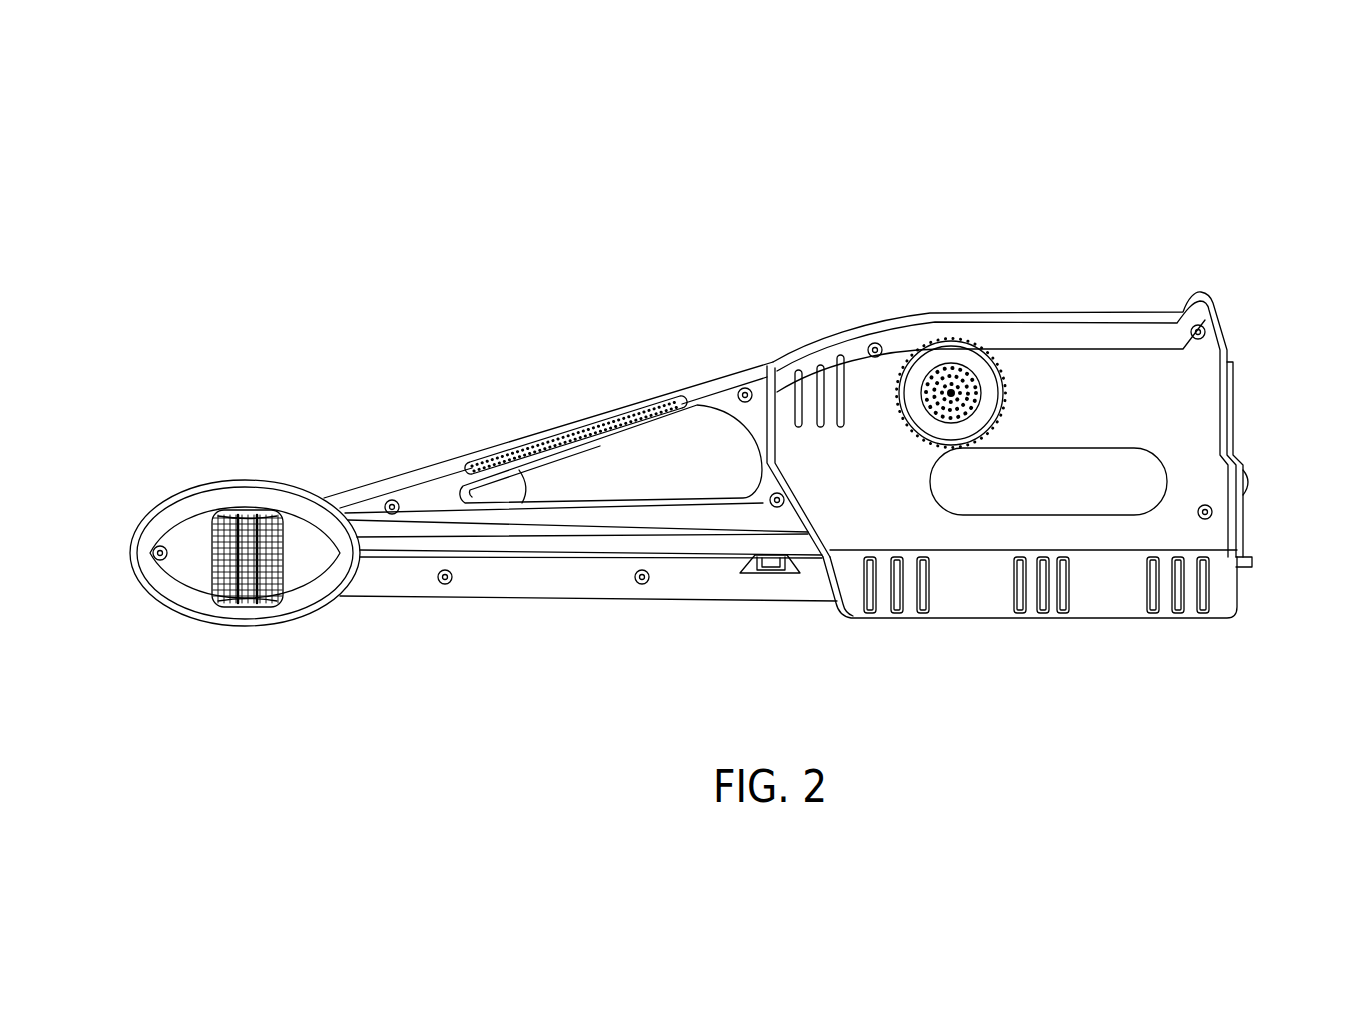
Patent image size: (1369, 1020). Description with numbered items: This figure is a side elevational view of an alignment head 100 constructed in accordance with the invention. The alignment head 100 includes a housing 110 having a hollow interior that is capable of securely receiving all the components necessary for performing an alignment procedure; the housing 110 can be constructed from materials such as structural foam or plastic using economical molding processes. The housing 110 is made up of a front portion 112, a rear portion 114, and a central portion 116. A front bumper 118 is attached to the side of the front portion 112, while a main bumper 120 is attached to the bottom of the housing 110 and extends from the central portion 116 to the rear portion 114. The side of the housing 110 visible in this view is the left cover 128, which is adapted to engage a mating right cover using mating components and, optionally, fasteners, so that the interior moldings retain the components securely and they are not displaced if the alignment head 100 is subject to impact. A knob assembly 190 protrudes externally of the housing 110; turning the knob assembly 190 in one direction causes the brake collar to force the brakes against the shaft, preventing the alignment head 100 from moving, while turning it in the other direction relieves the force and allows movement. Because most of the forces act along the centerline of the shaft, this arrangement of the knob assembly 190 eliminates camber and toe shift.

The alignment head 100 is at (1142, 165).
The housing 110 is at (698, 383).
The front portion 112 is at (208, 462).
The rear portion 114 is at (1252, 378).
The central portion 116 is at (948, 292).
The front bumper 118 is at (217, 595).
The main bumper 120 is at (987, 605).
The left cover 128 is at (1169, 429).
The knob assembly 190 is at (1005, 376).